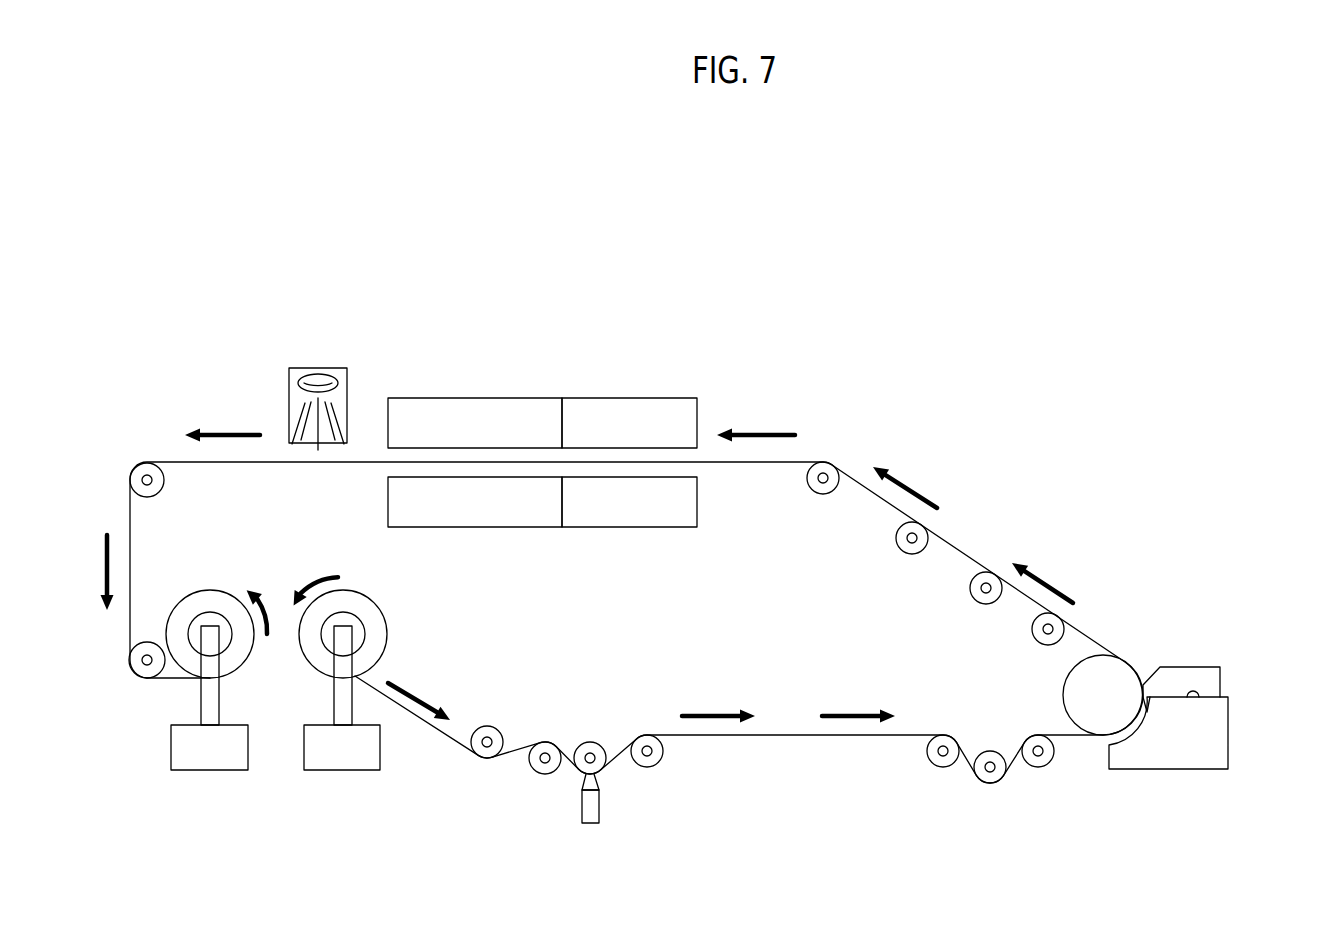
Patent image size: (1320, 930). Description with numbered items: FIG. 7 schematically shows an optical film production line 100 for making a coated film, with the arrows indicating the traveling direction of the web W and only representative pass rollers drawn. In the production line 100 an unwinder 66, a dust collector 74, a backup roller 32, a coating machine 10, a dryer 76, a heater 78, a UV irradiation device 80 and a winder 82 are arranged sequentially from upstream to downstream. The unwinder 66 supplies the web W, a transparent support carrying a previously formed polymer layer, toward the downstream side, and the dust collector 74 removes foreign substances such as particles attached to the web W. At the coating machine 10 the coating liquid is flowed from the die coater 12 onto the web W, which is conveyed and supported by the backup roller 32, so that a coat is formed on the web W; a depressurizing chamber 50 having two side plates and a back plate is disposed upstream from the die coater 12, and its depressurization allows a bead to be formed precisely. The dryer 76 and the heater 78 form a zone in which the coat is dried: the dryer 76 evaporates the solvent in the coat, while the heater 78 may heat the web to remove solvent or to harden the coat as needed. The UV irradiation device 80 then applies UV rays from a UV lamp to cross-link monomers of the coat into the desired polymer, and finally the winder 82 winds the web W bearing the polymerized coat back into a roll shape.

The production line 100 is at (622, 472).
The coating machine 10 is at (1154, 579).
The die coater 12 is at (1207, 665).
The backup roller 32 is at (1074, 695).
The depressurizing chamber 50 is at (1168, 765).
The unwinder 66 is at (343, 713).
The dust collector 74 is at (584, 833).
The dryer 76 is at (629, 433).
The heater 78 is at (475, 433).
The UV irradiation device 80 is at (284, 409).
The winder 82 is at (210, 713).
The web W is at (424, 774).